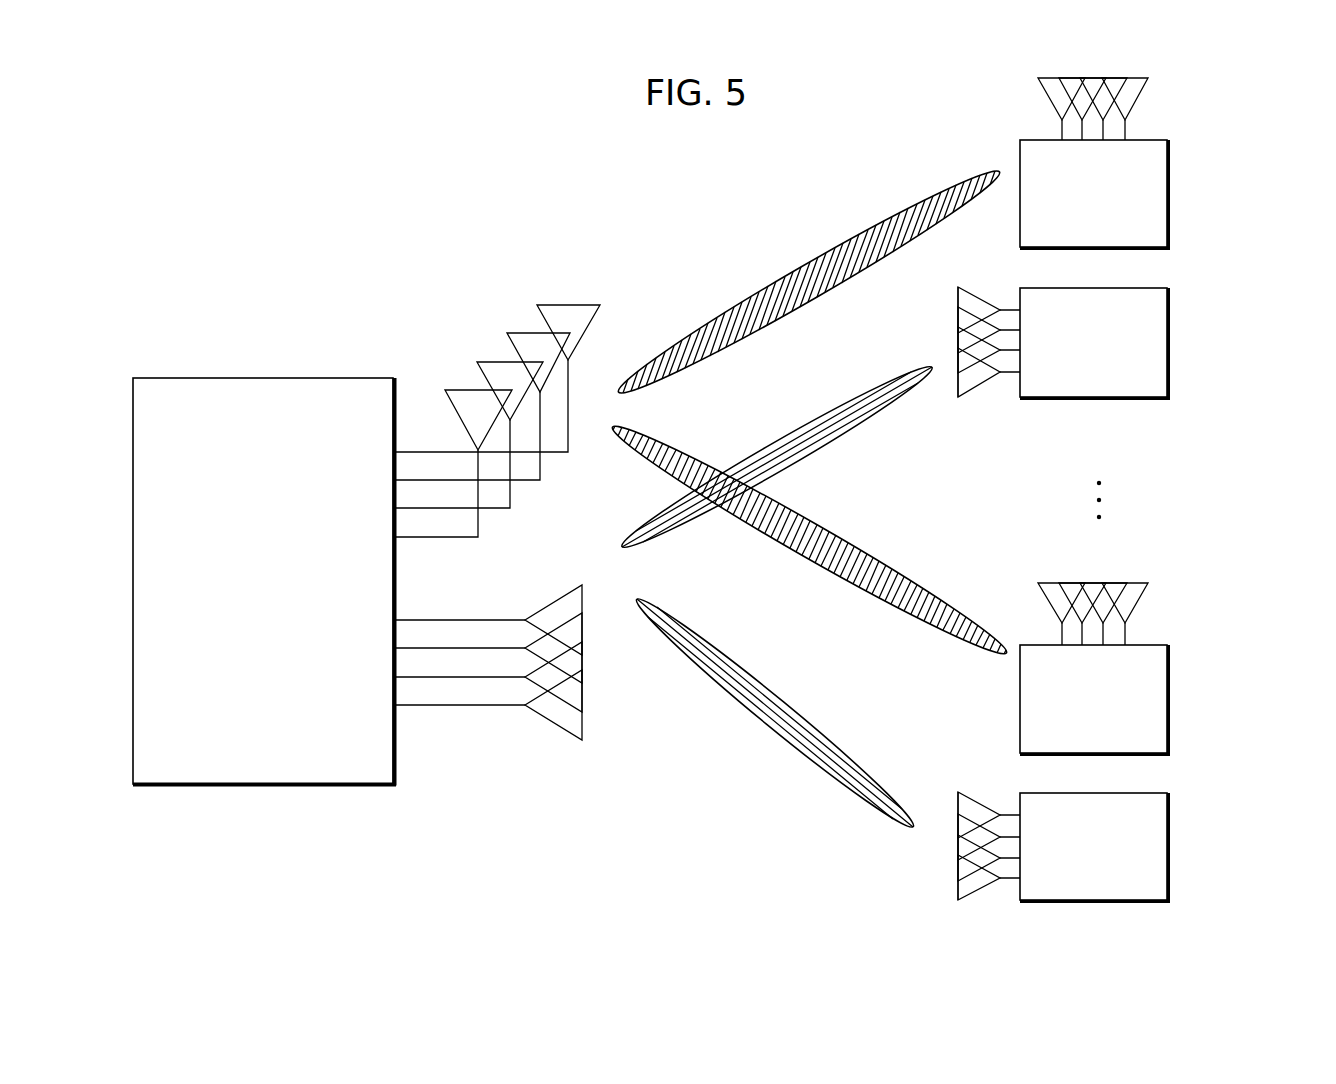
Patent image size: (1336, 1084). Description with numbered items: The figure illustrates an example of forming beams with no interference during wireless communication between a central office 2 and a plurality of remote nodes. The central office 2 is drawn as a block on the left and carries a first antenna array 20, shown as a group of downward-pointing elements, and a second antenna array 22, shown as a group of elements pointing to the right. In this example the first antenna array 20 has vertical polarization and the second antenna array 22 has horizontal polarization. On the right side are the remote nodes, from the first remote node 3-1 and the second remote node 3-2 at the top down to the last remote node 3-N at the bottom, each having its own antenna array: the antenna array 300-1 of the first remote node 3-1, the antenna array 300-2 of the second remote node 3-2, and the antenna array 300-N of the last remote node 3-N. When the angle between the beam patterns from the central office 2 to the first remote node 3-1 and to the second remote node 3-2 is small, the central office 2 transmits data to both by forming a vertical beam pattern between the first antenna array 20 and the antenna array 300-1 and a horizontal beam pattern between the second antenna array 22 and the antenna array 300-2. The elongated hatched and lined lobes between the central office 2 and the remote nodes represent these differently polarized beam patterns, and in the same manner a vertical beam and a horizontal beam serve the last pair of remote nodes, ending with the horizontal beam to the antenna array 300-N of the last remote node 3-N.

The central office 2 is at (265, 378).
The first antenna array 20 is at (572, 305).
The second antenna array 22 is at (583, 605).
The remote node 1 3-1 is at (1171, 190).
The remote node 2 3-2 is at (1171, 338).
The remote node N 3-N is at (1172, 846).
The antenna array of remote node 1 300-1 is at (1148, 95).
The antenna array of remote node 2 300-2 is at (975, 392).
The antenna array of remote node N 300-N is at (958, 890).